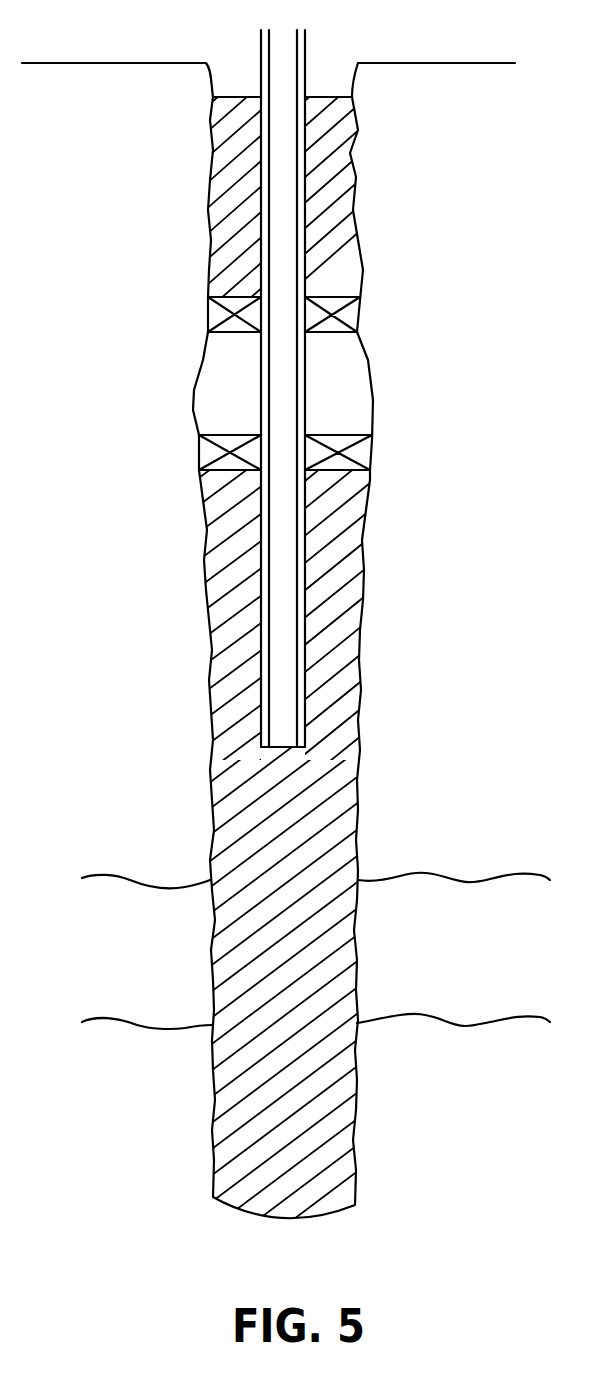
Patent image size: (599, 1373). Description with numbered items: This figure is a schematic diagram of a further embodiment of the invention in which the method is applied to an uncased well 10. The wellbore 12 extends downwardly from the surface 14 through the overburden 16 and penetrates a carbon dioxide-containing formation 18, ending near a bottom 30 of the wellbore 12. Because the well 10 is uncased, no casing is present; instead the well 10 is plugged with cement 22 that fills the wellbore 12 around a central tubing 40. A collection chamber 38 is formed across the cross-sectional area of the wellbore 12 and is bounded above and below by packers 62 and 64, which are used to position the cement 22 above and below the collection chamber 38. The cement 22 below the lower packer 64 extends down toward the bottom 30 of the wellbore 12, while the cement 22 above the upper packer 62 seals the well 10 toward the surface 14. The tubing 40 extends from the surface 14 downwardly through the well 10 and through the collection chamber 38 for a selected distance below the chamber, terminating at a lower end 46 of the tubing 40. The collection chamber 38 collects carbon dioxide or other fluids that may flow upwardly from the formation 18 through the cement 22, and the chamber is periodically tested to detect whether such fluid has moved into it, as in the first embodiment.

The well 10 is at (478, 184).
The wellbore 12 is at (353, 173).
The surface 14 is at (428, 63).
The overburden 16 is at (500, 335).
The carbon dioxide-containing formation 18 is at (478, 963).
The cement 22 is at (233, 203).
The bottom of wellbore 30 is at (355, 218).
The collection chamber 38 is at (343, 387).
The tubing 40 is at (300, 603).
The lower end of tubing 46 is at (267, 725).
The packer 62 is at (210, 317).
The packer 64 is at (208, 453).